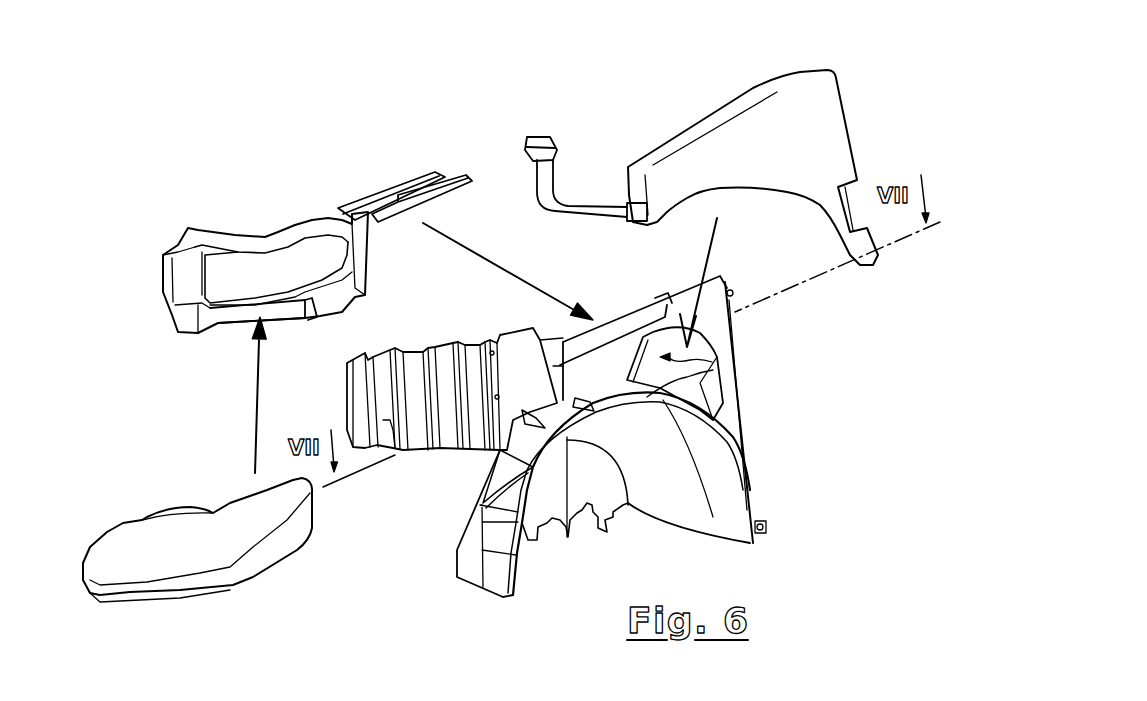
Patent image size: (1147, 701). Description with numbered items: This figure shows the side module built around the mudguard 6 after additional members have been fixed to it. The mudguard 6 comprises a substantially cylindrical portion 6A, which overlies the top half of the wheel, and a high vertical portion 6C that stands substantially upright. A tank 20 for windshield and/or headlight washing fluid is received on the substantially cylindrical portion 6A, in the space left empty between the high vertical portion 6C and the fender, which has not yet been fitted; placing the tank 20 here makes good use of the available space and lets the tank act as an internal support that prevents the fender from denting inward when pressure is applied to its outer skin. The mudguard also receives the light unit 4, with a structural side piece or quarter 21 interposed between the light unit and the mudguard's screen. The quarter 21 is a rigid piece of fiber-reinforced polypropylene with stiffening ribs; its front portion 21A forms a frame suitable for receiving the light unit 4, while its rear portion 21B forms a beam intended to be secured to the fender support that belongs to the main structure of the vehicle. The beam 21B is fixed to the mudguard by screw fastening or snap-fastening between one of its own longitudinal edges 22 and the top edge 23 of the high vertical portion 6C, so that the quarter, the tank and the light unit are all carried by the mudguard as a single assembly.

The light unit 4 is at (180, 548).
The mudguard 6 is at (770, 376).
The substantially cylindrical portion 6A is at (740, 413).
The high vertical portion 6C is at (710, 352).
The tank 20 is at (792, 140).
The structural side piece (quarter) 21 is at (299, 207).
The front portion 21A is at (237, 315).
The rear portion (beam) 21B is at (397, 193).
The longitudinal edge 22 is at (452, 204).
The top edge 23 is at (643, 310).